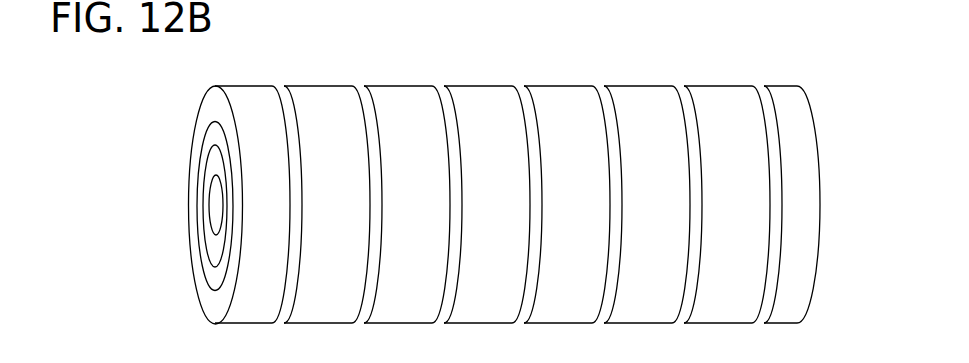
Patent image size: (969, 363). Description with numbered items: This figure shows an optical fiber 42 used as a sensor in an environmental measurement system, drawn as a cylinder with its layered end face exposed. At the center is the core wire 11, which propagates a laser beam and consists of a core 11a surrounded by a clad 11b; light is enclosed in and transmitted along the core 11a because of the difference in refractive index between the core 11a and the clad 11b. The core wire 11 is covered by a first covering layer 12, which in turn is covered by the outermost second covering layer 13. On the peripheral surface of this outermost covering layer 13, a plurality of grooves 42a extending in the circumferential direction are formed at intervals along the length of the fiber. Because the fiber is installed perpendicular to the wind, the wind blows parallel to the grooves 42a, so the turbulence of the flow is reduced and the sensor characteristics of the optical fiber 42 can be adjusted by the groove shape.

The core wire 11 is at (154, 210).
The core 11a is at (220, 212).
The clad 11b is at (220, 247).
The first covering layer 12 is at (216, 133).
The second covering layer 13 is at (209, 101).
The optical fiber 42 is at (517, 177).
The grooves 42a is at (443, 100).